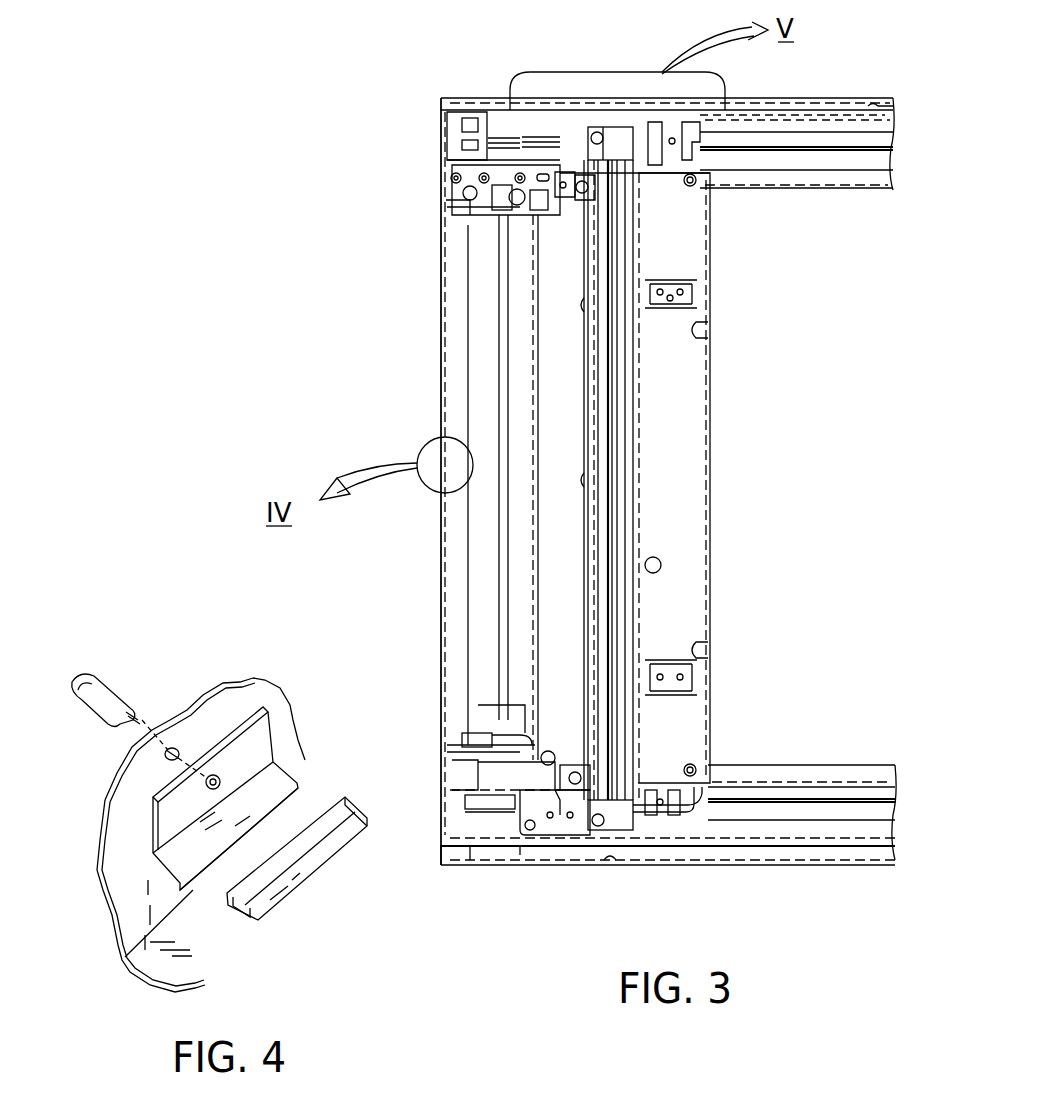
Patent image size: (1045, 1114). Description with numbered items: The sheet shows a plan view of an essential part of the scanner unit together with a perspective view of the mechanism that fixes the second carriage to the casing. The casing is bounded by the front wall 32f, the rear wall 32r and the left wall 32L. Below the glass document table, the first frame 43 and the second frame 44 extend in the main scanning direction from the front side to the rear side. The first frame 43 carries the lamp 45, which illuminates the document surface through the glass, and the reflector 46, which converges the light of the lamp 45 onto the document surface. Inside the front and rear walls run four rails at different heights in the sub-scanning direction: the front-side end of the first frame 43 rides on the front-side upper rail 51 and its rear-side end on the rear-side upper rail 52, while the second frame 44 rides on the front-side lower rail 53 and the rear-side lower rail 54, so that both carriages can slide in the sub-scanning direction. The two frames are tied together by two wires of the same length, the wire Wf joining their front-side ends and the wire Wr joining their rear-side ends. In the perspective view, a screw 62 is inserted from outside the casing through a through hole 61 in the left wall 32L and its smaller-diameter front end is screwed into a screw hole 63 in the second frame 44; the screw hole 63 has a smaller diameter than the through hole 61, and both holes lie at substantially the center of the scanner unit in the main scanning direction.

In FIG. 3, the rear wall 32r is at (844, 100).
In FIG. 3, the front wall 32f is at (844, 864).
In FIG. 3, the left wall 32L is at (441, 333).
In FIG. 4, the left wall 32L is at (228, 681).
In FIG. 3, the rear-side upper rail 52 is at (774, 122).
In FIG. 3, the rear-side lower rail 54 is at (836, 172).
In FIG. 3, the wire Wr is at (783, 151).
In FIG. 3, the wire Wf is at (790, 800).
In FIG. 3, the front-side lower rail 53 is at (845, 772).
In FIG. 3, the front-side upper rail 51 is at (772, 828).
In FIG. 3, the second frame 44 is at (454, 183).
In FIG. 4, the second frame 44 is at (195, 875).
In FIG. 3, the first frame 43 is at (712, 360).
In FIG. 3, the reflector 46 is at (598, 478).
In FIG. 3, the lamp 45 is at (618, 490).
In FIG. 4, the screw 62 is at (92, 679).
In FIG. 4, the through hole 61 is at (169, 745).
In FIG. 4, the screw hole 63 is at (220, 778).